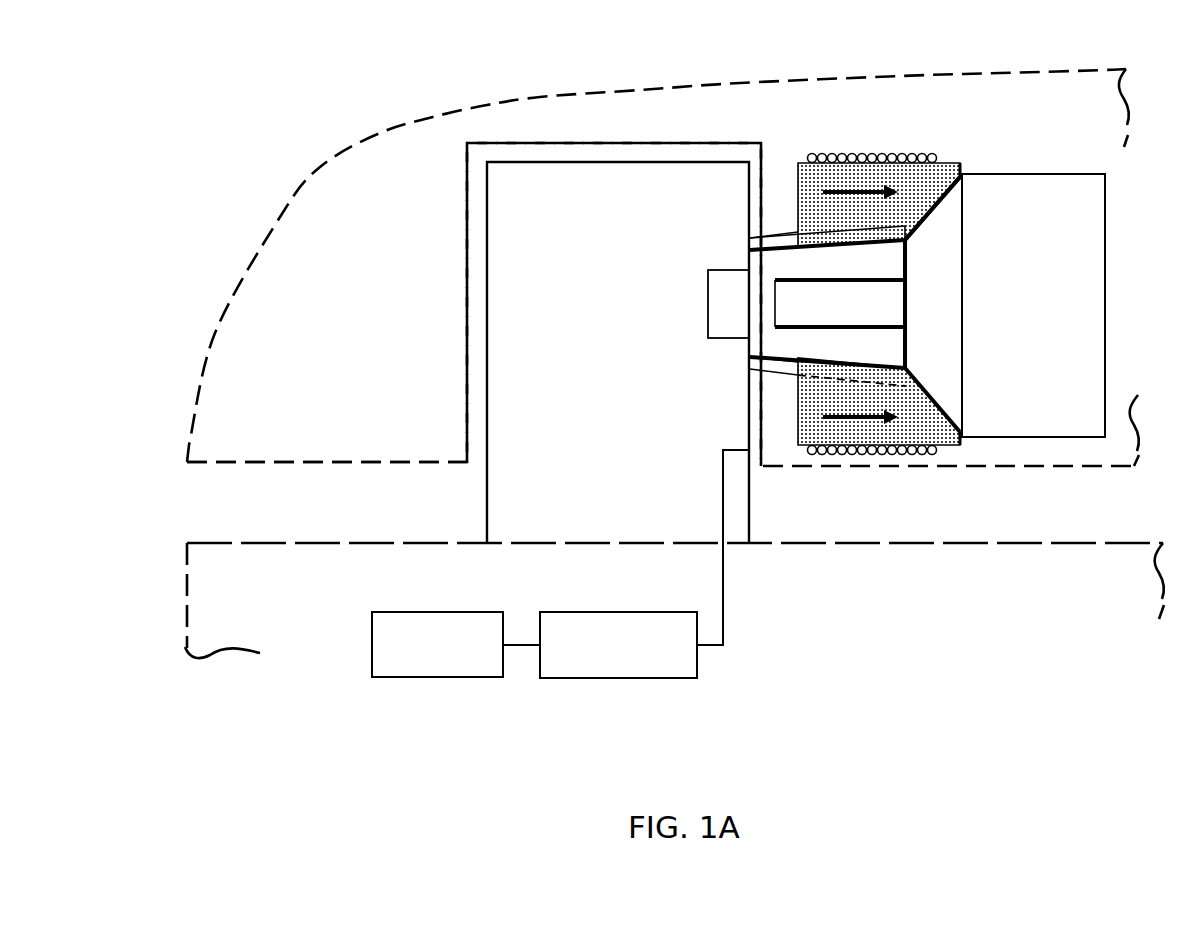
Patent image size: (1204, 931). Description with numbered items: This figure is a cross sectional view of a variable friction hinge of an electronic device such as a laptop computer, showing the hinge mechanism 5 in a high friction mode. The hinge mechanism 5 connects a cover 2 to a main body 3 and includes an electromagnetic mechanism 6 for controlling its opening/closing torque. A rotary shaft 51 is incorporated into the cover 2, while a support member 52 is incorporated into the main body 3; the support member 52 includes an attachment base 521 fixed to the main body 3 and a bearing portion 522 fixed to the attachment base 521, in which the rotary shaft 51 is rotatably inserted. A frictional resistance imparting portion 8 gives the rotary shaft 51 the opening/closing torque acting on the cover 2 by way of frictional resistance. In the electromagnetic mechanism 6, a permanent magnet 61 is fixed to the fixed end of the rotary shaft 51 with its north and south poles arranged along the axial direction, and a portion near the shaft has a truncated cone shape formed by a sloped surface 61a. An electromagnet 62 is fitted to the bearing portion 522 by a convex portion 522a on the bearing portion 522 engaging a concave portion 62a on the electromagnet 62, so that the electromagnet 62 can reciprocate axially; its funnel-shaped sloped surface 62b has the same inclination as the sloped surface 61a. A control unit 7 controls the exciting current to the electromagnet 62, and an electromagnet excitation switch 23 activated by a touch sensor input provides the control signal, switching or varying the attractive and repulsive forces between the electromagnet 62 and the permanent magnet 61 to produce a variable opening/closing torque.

The cover 2 is at (392, 122).
The main body 3 is at (183, 563).
The hinge mechanism 5 is at (909, 504).
The electromagnetic mechanism 6 is at (849, 122).
The control unit 7 is at (679, 678).
The frictional resistance imparting portion 8 is at (784, 278).
The electromagnet excitation switch 23 is at (441, 678).
The rotary shaft 51 is at (873, 330).
The support member 52 is at (591, 549).
The attachment base 521 is at (487, 502).
The bearing portion 522 is at (844, 340).
The convex portion 522a is at (780, 368).
The permanent magnet 61 is at (1050, 174).
The sloped surface 61a is at (942, 157).
The electromagnet 62 is at (822, 155).
The concave portion 62a is at (908, 155).
The funnel-shaped sloped surface 62b is at (933, 218).